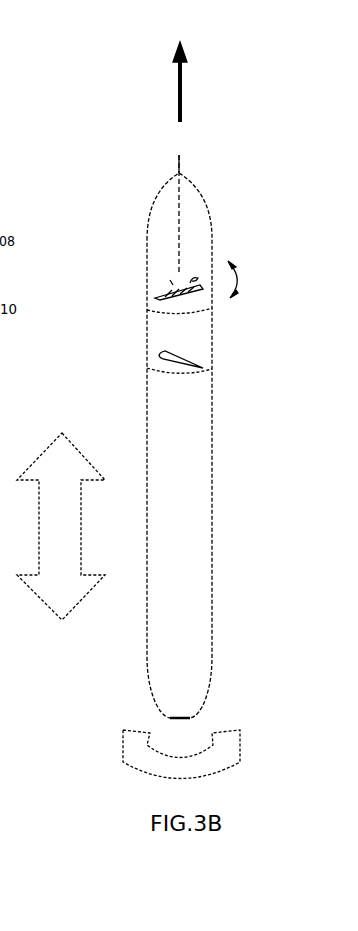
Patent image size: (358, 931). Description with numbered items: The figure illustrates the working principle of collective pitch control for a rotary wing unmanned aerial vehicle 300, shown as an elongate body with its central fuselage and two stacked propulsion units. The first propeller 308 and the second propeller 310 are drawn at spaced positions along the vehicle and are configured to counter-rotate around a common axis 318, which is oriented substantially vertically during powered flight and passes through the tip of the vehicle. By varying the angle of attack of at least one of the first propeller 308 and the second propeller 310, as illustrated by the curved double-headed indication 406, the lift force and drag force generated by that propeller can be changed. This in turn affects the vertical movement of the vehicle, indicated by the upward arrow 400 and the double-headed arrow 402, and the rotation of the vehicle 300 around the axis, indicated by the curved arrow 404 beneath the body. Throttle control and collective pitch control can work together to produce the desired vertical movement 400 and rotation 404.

The unmanned aerial vehicle 300 is at (182, 612).
The first propeller 308 is at (162, 293).
The second propeller 310 is at (200, 358).
The common axis 318 is at (190, 158).
The arrow 400 is at (199, 82).
The arrow 402 is at (61, 526).
The arrow 404 is at (181, 756).
The angle of attack variation 406 is at (240, 261).